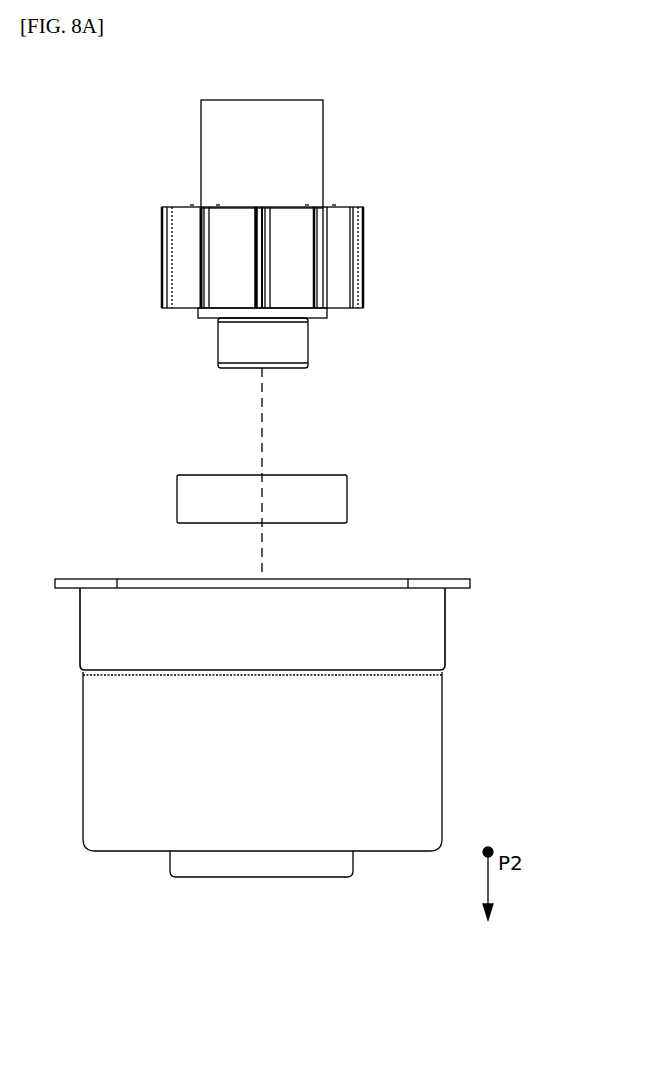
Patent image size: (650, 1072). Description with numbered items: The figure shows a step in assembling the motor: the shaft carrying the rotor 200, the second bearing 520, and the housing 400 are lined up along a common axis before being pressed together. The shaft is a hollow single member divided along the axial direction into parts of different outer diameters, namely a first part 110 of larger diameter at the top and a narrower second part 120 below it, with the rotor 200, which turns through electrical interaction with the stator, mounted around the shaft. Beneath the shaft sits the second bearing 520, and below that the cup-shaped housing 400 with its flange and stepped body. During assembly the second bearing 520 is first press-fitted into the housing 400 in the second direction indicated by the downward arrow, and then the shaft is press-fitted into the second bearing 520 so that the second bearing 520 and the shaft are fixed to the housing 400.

The first part 110 is at (308, 168).
The second part 120 is at (290, 343).
The rotor 200 is at (338, 265).
The second bearing 520 is at (313, 503).
The housing 400 is at (417, 762).